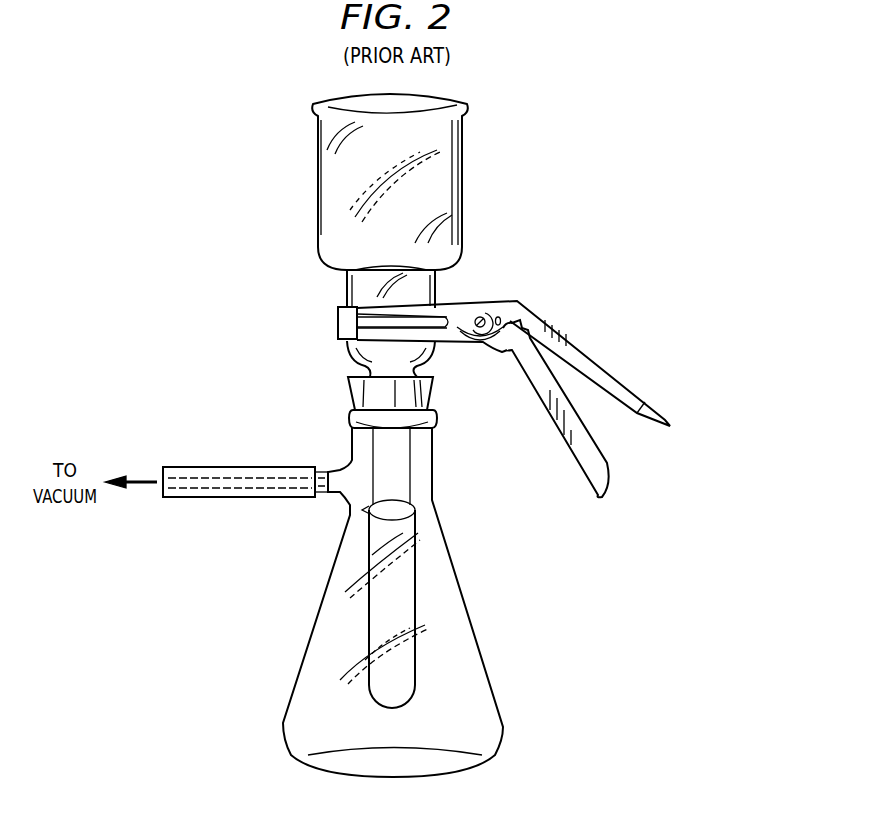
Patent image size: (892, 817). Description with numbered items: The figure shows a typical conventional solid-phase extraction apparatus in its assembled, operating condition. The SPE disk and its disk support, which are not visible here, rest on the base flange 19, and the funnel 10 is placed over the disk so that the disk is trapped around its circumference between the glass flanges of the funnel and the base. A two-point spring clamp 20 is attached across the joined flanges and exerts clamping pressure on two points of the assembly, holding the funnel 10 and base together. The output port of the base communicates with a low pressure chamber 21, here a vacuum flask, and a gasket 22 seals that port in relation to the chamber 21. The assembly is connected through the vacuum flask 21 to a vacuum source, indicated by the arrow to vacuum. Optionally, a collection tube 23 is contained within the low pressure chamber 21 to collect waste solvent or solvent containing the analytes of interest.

The funnel 10 is at (465, 194).
The flange 19 is at (338, 330).
The two-point spring clamp 20 is at (517, 301).
The low pressure chamber 21 is at (455, 573).
The gasket 22 is at (358, 410).
The collection tube 23 is at (367, 599).